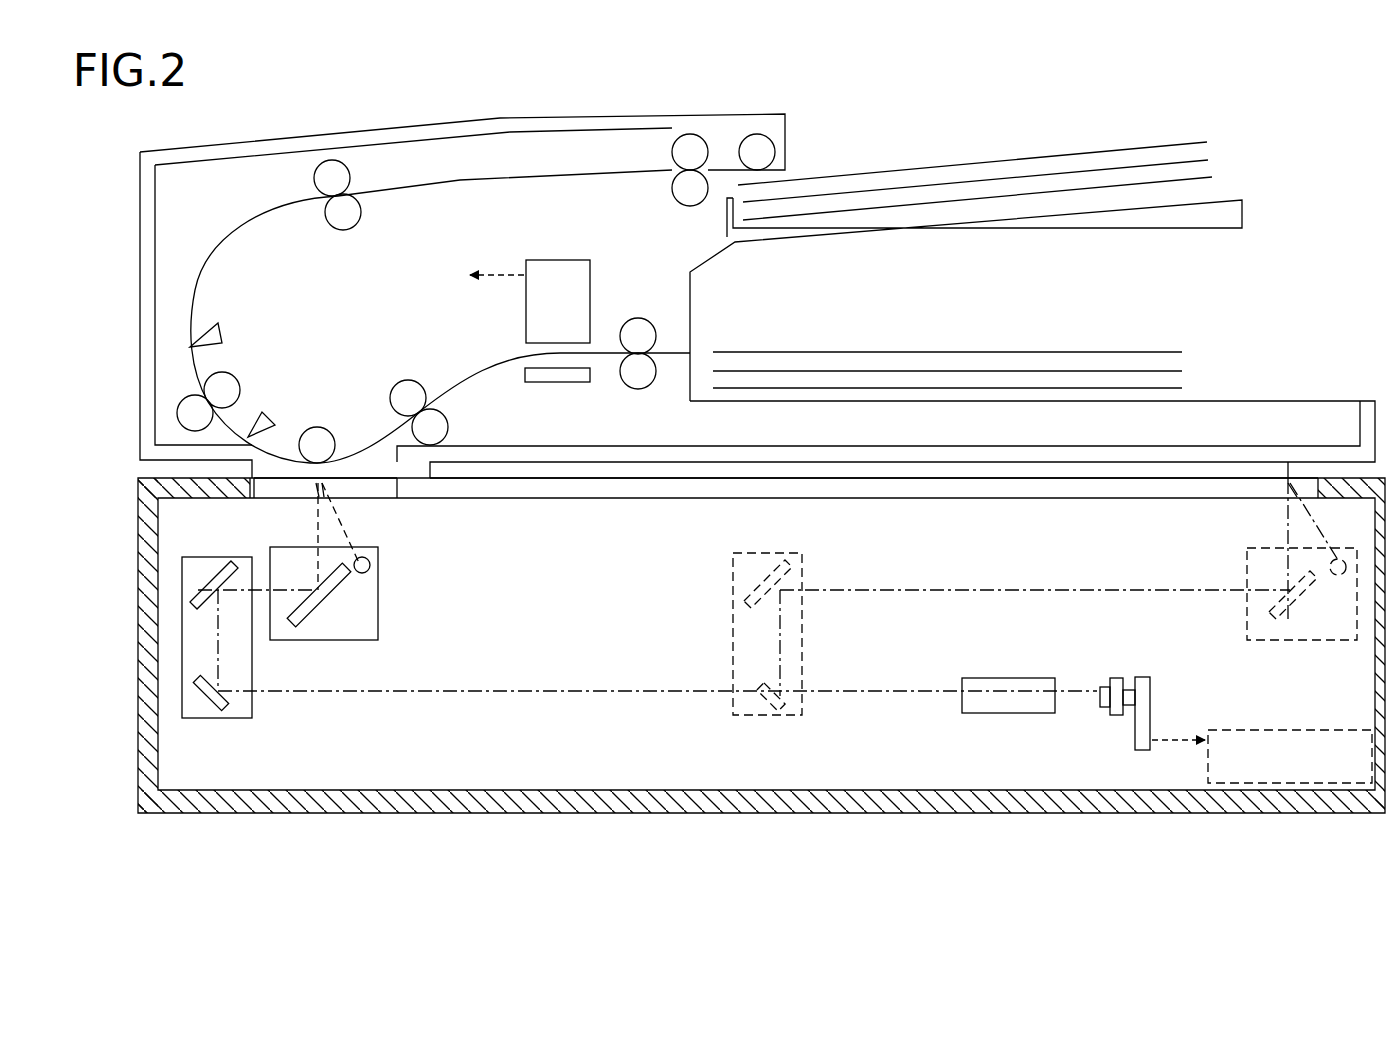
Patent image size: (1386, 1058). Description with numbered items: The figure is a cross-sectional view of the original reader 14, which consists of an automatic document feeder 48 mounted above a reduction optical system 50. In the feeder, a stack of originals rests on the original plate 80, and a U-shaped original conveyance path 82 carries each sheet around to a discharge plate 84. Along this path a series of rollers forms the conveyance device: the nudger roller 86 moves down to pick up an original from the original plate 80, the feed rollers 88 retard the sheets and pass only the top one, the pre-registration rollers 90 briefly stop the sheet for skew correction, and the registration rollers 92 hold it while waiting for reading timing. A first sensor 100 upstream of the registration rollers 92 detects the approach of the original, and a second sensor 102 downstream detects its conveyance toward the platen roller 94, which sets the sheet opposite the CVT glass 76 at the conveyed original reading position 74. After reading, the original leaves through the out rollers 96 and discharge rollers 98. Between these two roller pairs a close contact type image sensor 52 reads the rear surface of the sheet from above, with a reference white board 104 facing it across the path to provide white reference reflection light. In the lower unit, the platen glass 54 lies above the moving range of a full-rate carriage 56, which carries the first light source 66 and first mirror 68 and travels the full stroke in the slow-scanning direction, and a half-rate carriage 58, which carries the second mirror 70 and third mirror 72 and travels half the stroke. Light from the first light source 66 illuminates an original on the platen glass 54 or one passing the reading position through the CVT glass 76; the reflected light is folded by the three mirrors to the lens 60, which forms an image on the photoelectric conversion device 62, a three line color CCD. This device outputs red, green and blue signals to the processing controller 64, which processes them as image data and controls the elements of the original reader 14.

The original reader 14 is at (780, 918).
The automatic document feeder 48 is at (138, 352).
The reduction optical system 50 is at (136, 628).
The close contact type image sensor 52 is at (591, 268).
The platen glass 54 is at (1000, 497).
The full-rate carriage 56 is at (364, 616).
The half-rate carriage 58 is at (255, 638).
The lens 60 is at (980, 678).
The photoelectric conversion device 62 is at (1112, 678).
The processing controller 64 is at (1285, 730).
The first light source 66 is at (362, 574).
The first mirror 68 is at (320, 608).
The second mirror 70 is at (200, 597).
The third mirror 72 is at (206, 698).
The conveyed original reading position 74 is at (338, 470).
The CVT glass 76 is at (383, 490).
The original plate 80 is at (1062, 214).
The original conveyance path 82 is at (556, 180).
The discharge plate 84 is at (1237, 401).
The nudger roller 86 is at (762, 134).
The feed rollers 88 is at (692, 134).
The pre-registration rollers 90 is at (330, 160).
The registration rollers 92 is at (228, 375).
The platen roller 94 is at (328, 428).
The out rollers 96 is at (400, 381).
The discharge rollers 98 is at (645, 319).
The first sensor 100 is at (222, 335).
The second sensor 102 is at (268, 422).
The reference white board 104 is at (568, 383).